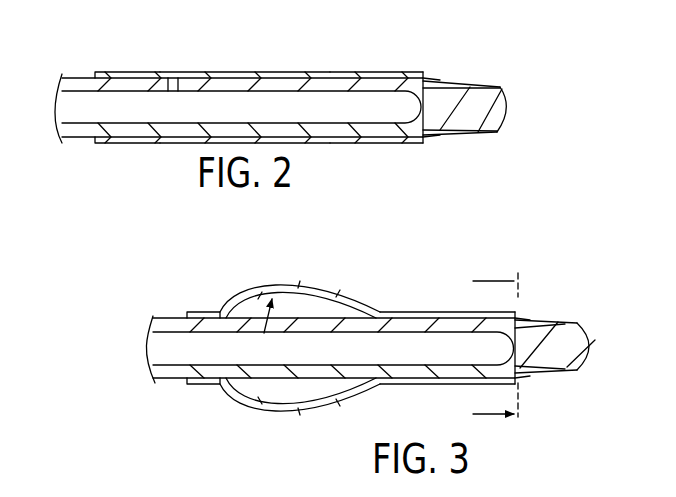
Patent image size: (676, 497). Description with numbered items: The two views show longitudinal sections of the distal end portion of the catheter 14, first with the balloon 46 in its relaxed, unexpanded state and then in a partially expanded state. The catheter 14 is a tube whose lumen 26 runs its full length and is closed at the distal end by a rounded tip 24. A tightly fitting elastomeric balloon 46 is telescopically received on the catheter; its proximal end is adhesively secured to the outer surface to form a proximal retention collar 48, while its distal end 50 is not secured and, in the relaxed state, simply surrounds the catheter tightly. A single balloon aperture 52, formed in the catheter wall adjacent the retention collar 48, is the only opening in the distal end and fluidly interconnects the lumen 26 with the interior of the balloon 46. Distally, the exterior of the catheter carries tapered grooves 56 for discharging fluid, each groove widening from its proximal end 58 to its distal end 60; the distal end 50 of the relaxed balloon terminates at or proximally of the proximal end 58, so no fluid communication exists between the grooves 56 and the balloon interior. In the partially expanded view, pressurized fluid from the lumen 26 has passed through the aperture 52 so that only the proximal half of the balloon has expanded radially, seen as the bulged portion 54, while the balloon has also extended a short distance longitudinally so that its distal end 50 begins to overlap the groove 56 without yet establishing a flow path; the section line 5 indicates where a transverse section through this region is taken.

In FIG. 2, the catheter 14 is at (74, 77).
In FIG. 3, the catheter 14 is at (169, 316).
In FIG. 2, the lumen 26 is at (133, 107).
In FIG. 3, the lumen 26 is at (170, 353).
In FIG. 2, the proximal retention collar 48 is at (125, 71).
In FIG. 3, the proximal retention collar 48 is at (195, 311).
In FIG. 2, the balloon 46 is at (222, 71).
In FIG. 3, the balloon 46 is at (308, 288).
In FIG. 2, the distal end of the balloon 50 is at (417, 72).
In FIG. 3, the distal end of the balloon 50 is at (503, 312).
In FIG. 2, the balloon aperture 52 is at (173, 91).
In FIG. 3, the balloon aperture 52 is at (223, 350).
In FIG. 3, the lower balloon wall 54 is at (290, 393).
In FIG. 2, the rounded tip 24 is at (511, 107).
In FIG. 3, the rounded tip 24 is at (599, 347).
In FIG. 2, the groove 56 is at (476, 84).
In FIG. 3, the groove 56 is at (565, 322).
In FIG. 2, the proximal end of the groove 58 is at (440, 80).
In FIG. 3, the proximal end of the groove 58 is at (530, 374).
In FIG. 2, the distal end of the groove 60 is at (498, 87).
In FIG. 3, the distal end of the groove 60 is at (578, 323).
In FIG. 3, the section line 5- 5 is at (495, 350).